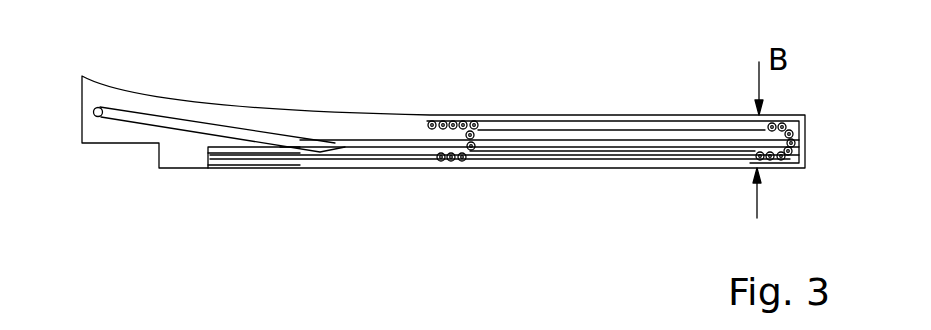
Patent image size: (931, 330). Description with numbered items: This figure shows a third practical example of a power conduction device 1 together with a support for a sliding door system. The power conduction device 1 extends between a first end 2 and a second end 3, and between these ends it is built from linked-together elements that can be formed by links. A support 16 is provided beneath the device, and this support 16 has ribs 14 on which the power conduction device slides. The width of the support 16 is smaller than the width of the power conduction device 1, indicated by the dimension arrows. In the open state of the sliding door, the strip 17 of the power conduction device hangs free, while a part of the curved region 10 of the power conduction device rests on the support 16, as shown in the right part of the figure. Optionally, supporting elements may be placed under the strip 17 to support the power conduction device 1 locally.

The power conduction device 1 is at (552, 128).
The first end 2 is at (432, 117).
The second end 3 is at (98, 114).
The curved region 10 is at (470, 150).
The ribs 14 is at (235, 165).
The support 16 is at (650, 148).
The strip 17 is at (623, 128).